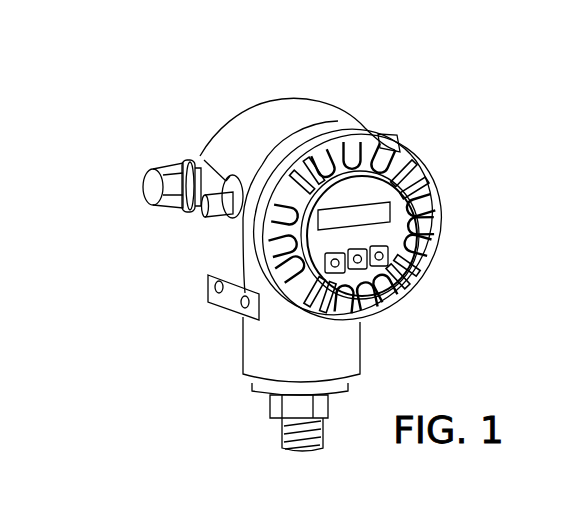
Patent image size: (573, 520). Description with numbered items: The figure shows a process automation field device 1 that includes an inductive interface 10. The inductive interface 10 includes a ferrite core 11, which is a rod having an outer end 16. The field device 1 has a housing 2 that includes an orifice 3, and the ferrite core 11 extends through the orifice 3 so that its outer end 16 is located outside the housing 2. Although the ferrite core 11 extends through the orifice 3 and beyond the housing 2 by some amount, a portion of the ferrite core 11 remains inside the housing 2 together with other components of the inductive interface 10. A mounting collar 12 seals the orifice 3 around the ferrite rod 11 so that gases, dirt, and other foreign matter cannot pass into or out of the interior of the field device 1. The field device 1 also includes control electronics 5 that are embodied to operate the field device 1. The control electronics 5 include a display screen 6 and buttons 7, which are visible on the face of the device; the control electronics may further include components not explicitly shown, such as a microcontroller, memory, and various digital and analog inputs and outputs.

The field device 1 is at (206, 97).
The housing 2 is at (340, 123).
The orifice 3 is at (208, 274).
The control electronics 5 is at (362, 196).
The display screen 6 is at (364, 217).
The buttons 7 is at (388, 256).
The inductive interface 10 is at (220, 166).
The ferrite core 11 is at (197, 212).
The mounting collar 12 is at (230, 206).
The outer end 16 is at (197, 211).